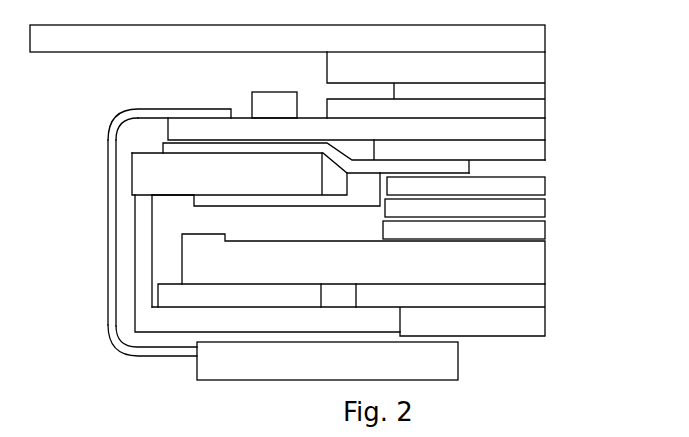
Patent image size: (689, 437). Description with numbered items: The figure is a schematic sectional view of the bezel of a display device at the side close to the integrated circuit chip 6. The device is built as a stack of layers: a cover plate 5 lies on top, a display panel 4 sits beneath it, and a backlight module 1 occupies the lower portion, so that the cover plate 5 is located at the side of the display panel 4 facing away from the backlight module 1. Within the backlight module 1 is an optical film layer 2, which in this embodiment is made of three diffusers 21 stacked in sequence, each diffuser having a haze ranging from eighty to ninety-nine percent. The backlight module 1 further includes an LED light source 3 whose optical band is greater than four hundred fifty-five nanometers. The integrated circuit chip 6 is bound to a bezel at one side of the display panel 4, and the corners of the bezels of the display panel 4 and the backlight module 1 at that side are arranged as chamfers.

The backlight module 1 is at (374, 260).
The optical film layer 2 is at (510, 208).
The diffusers 21 is at (515, 187).
The LED light source 3 is at (203, 264).
The display panel 4 is at (323, 112).
The cover plate 5 is at (530, 42).
The integrated circuit chip 6 is at (266, 101).